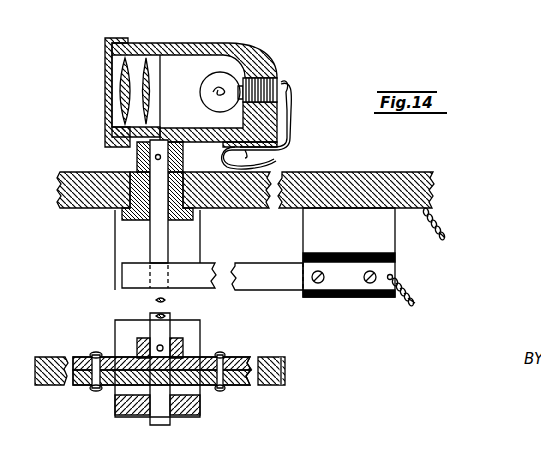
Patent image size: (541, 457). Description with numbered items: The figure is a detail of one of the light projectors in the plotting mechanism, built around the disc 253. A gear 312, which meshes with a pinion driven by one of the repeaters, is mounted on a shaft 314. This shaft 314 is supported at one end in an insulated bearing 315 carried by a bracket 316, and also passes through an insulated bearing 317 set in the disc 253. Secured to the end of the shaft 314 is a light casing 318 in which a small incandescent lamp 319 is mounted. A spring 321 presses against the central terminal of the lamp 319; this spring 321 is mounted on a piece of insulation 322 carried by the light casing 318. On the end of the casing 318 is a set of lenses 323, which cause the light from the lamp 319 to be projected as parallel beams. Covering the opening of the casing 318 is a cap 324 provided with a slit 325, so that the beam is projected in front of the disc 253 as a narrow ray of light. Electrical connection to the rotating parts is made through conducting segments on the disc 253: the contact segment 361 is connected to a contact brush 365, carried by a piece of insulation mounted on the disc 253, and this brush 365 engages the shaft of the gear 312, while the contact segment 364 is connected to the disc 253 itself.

The disc 253 is at (420, 191).
The gear 312 is at (284, 371).
The shaft 314 is at (152, 246).
The insulated bearing 315 is at (178, 424).
The bracket 316 is at (212, 242).
The insulated bearing 317 is at (128, 184).
The light casing 318 is at (258, 60).
The incandescent lamp 319 is at (210, 80).
The spring 321 is at (291, 112).
The piece of insulation 322 is at (283, 143).
The set of lenses 323 is at (147, 72).
The cap 324 is at (105, 45).
The slit 325 is at (107, 98).
The contact segment 361 is at (426, 294).
The contact segment 364 is at (452, 245).
The contact brush 365 is at (267, 276).